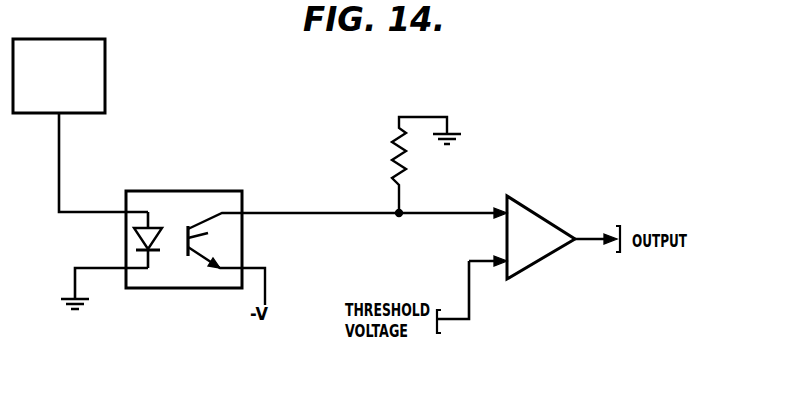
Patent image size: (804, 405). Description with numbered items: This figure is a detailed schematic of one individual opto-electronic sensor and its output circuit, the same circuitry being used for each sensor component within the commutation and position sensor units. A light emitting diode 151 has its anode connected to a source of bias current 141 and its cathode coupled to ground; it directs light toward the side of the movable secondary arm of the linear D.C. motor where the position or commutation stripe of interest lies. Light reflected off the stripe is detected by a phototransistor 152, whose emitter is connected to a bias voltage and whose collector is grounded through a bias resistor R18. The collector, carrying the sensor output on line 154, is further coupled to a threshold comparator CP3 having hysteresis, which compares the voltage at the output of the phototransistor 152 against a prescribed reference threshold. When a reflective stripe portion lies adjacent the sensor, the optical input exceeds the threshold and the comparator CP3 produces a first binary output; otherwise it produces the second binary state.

The source of bias current 141 is at (105, 71).
The light emitting diode 151 is at (133, 238).
The phototransistor 152 is at (208, 233).
The output line 154 is at (265, 212).
The bias resistor R18 is at (393, 166).
The threshold comparator CP3 is at (541, 237).